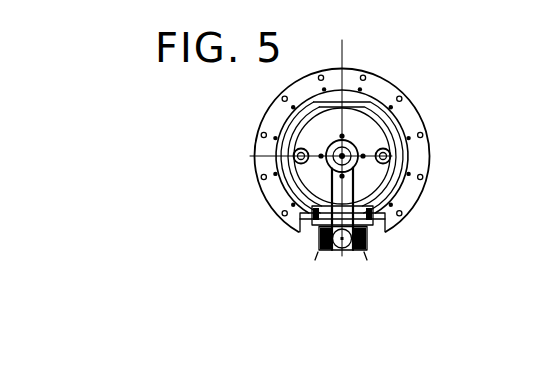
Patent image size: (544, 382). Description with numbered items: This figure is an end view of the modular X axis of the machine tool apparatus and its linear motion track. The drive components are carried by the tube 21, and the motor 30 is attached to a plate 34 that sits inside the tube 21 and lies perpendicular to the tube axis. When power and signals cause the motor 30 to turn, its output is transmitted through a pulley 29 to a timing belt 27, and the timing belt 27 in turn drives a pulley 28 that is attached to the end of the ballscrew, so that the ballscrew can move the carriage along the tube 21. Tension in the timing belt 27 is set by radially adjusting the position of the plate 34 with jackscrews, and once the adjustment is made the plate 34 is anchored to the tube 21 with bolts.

The tube 21 is at (393, 91).
The timing belt 27 is at (355, 187).
The pulley 28 is at (338, 240).
The pulley 29 is at (389, 150).
The motor 30 is at (323, 141).
The plate 34 is at (312, 138).